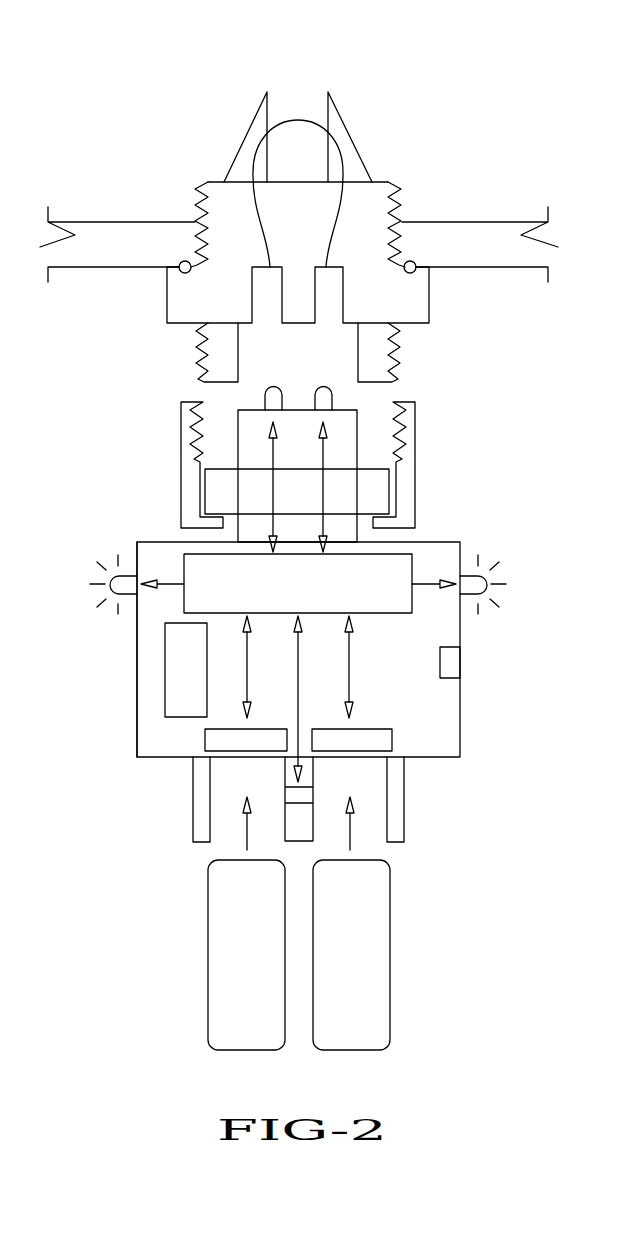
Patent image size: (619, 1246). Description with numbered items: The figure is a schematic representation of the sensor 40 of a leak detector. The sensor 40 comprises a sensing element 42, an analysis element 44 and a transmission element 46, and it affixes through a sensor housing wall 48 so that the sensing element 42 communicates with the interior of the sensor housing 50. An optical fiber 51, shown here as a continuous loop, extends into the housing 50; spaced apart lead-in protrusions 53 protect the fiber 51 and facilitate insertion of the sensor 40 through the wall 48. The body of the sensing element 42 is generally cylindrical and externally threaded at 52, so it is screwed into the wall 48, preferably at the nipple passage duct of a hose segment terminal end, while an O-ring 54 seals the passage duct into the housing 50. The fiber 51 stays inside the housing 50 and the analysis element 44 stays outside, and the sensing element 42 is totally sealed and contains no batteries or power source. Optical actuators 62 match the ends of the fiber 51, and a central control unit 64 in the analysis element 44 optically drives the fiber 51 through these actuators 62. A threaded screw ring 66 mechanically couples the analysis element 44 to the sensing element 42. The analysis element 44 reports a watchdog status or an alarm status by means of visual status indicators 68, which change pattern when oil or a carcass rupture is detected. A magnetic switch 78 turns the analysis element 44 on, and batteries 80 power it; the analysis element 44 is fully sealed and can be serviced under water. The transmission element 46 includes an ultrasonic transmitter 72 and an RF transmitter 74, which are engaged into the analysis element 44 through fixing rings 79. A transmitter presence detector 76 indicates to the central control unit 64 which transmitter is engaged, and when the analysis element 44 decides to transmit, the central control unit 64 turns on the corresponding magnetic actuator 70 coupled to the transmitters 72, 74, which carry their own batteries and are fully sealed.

The sensor 40 is at (506, 729).
The sensing element 42 is at (439, 173).
The analysis element 44 is at (475, 633).
The transmission element 46 is at (315, 936).
The sensor housing wall 48 is at (118, 247).
The sensor housing 50 is at (391, 130).
The optical fiber 51 is at (298, 118).
The external threads 52 is at (198, 353).
The lead-in protrusions 53 is at (263, 100).
The O-ring 54 is at (414, 273).
The optical actuators 62 is at (272, 400).
The central control unit 64 is at (203, 570).
The threaded screw ring 66 is at (415, 460).
The visual status indicators 68 is at (110, 582).
The magnetic actuators 70 is at (217, 738).
The ultrasonic transmitter 72 is at (231, 1005).
The RF transmitter 74 is at (367, 1005).
The transmitter presence detector 76 is at (305, 797).
The magnetic switch 78 is at (452, 667).
The fixing rings 79 is at (197, 832).
The batteries 80 is at (173, 662).